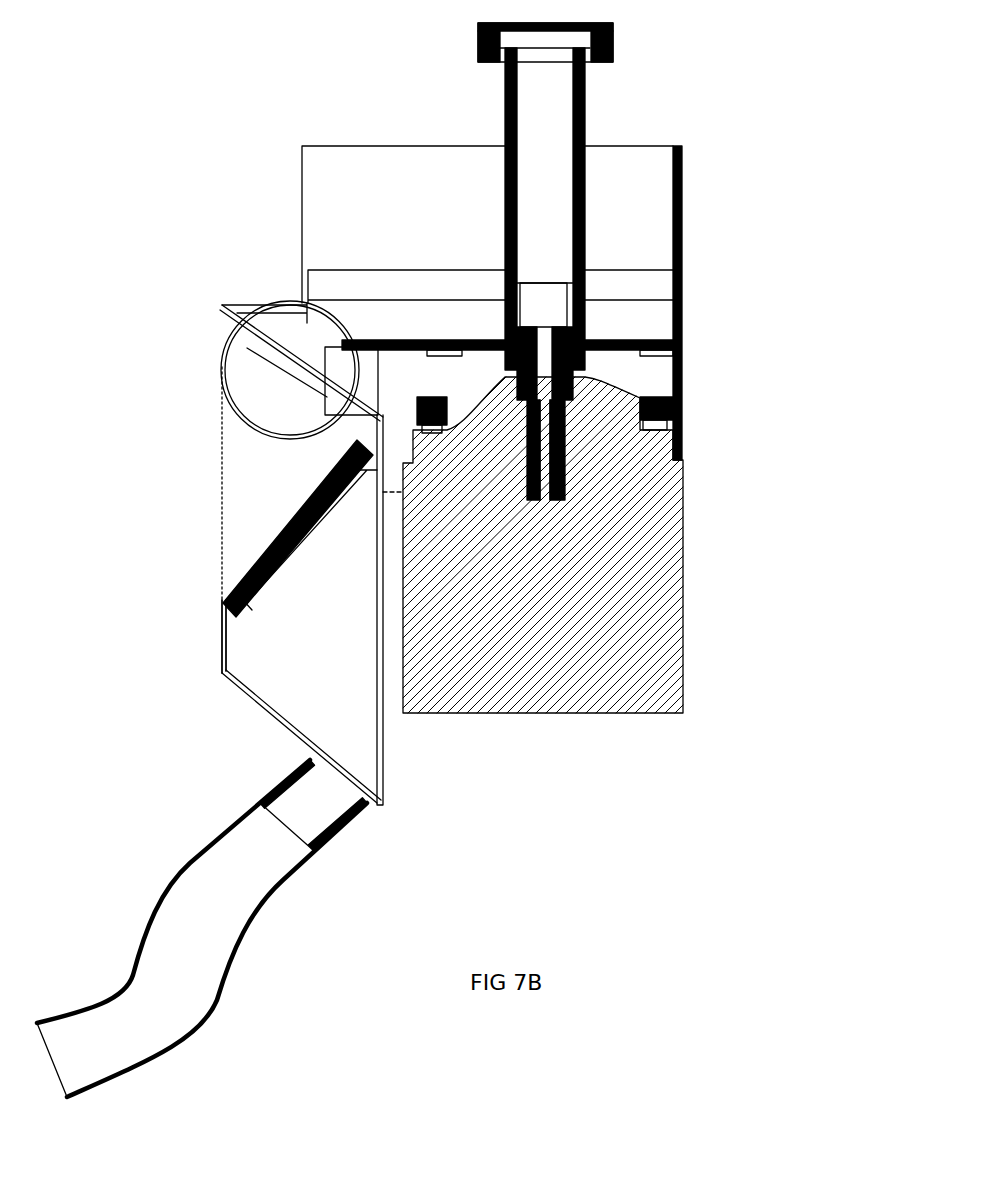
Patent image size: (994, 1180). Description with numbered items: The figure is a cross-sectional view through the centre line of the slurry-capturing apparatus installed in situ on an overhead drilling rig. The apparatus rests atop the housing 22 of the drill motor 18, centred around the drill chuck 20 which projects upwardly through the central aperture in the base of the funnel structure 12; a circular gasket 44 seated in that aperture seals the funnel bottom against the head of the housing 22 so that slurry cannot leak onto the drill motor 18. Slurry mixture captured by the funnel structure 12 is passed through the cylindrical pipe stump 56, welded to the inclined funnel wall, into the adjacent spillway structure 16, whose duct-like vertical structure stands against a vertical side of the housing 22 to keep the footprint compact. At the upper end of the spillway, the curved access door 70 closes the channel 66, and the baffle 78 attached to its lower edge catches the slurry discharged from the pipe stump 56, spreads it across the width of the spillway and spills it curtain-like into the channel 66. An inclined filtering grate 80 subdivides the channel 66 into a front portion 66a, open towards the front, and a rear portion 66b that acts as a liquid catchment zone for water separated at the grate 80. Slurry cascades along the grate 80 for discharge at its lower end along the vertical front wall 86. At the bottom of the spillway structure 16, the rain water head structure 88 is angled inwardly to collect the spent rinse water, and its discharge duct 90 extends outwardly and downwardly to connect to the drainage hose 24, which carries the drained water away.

The funnel structure 12 is at (285, 233).
The spillway structure 16 is at (160, 515).
The drill motor 18 is at (672, 521).
The drill chuck 20 is at (585, 112).
The housing 22 is at (599, 545).
The drainage hose 24 is at (287, 883).
The circular gasket 44 is at (653, 397).
The cylindrical pipe stump 56 is at (343, 377).
The vertical channel 66 is at (252, 503).
The front portion of channel 66a is at (294, 486).
The rear portion of channel 66b is at (338, 608).
The access door 70 is at (243, 337).
The baffle 78 is at (253, 423).
The filtering grate 80 is at (277, 550).
The front wall 86 is at (222, 648).
The rain water head structure 88 is at (280, 702).
The discharge duct 90 is at (357, 812).